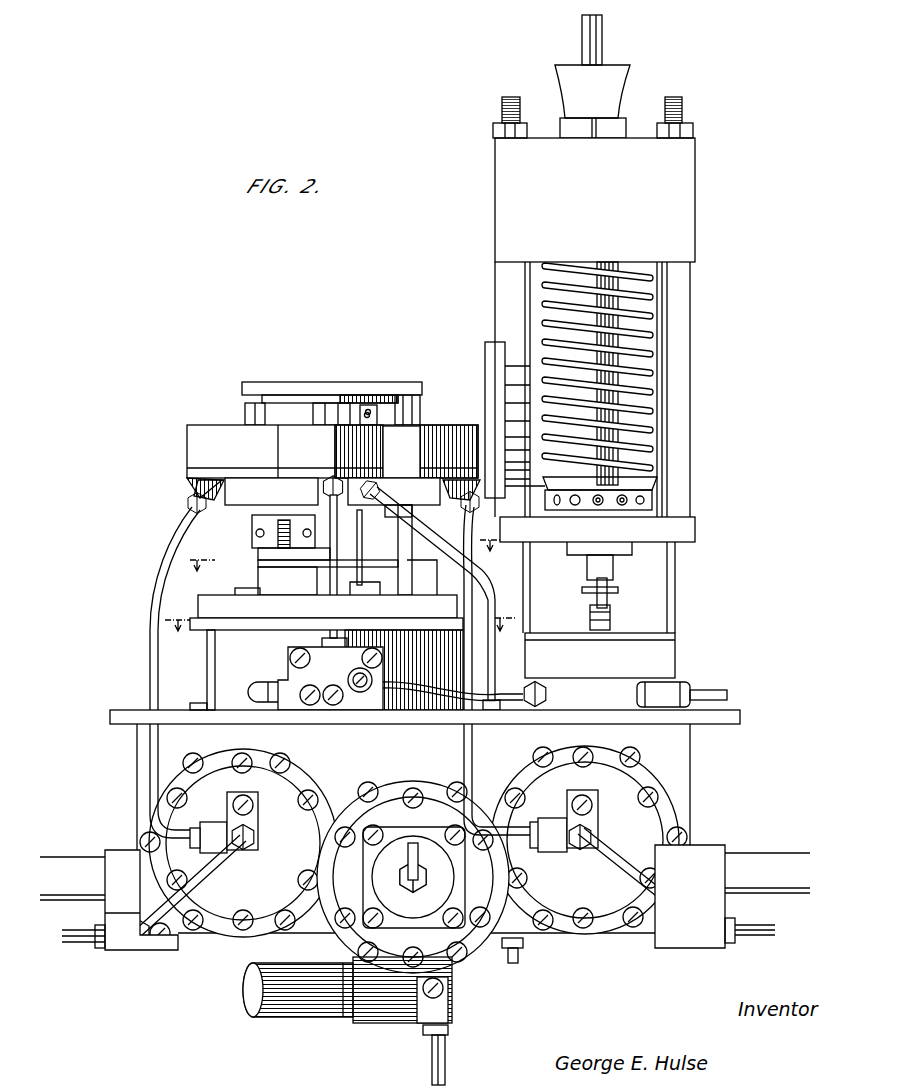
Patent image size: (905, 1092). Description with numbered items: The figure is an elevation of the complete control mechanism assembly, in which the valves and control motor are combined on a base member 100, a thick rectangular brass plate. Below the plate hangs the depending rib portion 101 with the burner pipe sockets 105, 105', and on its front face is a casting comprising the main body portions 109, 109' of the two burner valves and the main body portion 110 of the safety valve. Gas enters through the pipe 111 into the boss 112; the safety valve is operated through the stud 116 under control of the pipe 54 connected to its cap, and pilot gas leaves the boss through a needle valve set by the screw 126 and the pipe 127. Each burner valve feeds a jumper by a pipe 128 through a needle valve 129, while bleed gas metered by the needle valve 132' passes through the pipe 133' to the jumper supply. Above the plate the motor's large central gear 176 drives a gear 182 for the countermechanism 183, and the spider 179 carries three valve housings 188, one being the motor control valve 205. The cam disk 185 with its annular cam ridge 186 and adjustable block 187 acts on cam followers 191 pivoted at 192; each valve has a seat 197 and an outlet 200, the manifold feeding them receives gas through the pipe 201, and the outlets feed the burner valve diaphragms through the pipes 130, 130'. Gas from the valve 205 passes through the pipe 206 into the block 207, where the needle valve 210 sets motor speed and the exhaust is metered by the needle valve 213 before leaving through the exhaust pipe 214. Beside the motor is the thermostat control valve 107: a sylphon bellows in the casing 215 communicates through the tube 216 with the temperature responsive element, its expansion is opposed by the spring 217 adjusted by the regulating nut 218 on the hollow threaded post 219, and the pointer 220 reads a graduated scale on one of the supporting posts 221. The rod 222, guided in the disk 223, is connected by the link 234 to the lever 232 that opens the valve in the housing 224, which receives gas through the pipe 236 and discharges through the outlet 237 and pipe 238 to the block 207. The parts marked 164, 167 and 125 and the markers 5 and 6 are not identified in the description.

The tube 216 is at (604, 48).
The casing 215 is at (697, 222).
The supporting posts 221 is at (683, 303).
The thermostat control valve 107 is at (655, 450).
The hollow threaded post 219 is at (618, 410).
The spring 217 is at (653, 357).
The regulating nut 218 is at (652, 493).
The pointer 220 is at (515, 490).
The disk 223 is at (698, 545).
The rod 222 is at (615, 570).
The link 234 is at (620, 606).
The lever 232 is at (590, 615).
The housing 224 is at (660, 653).
The pipe 236 is at (700, 693).
The outlet 237 is at (548, 697).
The base member 100 is at (742, 720).
The cam disk 185 is at (298, 388).
The annular cam ridge 186 is at (363, 393).
The block 187 is at (415, 402).
The cam follower 191 is at (403, 410).
The seat 197 is at (247, 413).
The valve housings 188 is at (437, 440).
The motor control valve 205 is at (290, 443).
The pivot 192 is at (367, 420).
The outlet 200 is at (185, 500).
The gear 176 is at (342, 566).
The countermechanism 183 is at (275, 532).
The gear 182 is at (260, 565).
The rod 164 is at (362, 568).
The bracket 167 is at (407, 572).
The spider 179 is at (410, 578).
The pipe 206 is at (335, 605).
The needle valve 210 is at (365, 676).
The block 207 is at (288, 672).
The needle valve 213 is at (336, 676).
The exhaust pipe 214 is at (260, 690).
The pipe 238 is at (433, 690).
The pipe 130 is at (184, 680).
The pipe 201 is at (478, 590).
The pipe 130' is at (482, 676).
The section line 6 is at (341, 545).
The section line 5 is at (341, 614).
The depending rib portion 101 is at (692, 772).
The main body portion 109 is at (238, 859).
The needle valve 129 is at (160, 942).
The burner pipe socket 105 is at (136, 932).
The shaft 125 is at (65, 867).
The pipe 128 is at (73, 945).
The needle valve 132' is at (596, 821).
The main body portion 109' is at (594, 840).
The pipe 133' is at (637, 877).
The burner pipe socket 105' is at (718, 908).
The main body portion 110 is at (385, 812).
The pipe 54 is at (420, 850).
The pipe 111 is at (287, 1000).
The stud 116 is at (408, 912).
The boss 112 is at (363, 1015).
The screw 126 is at (442, 987).
The pipe 127 is at (432, 1055).